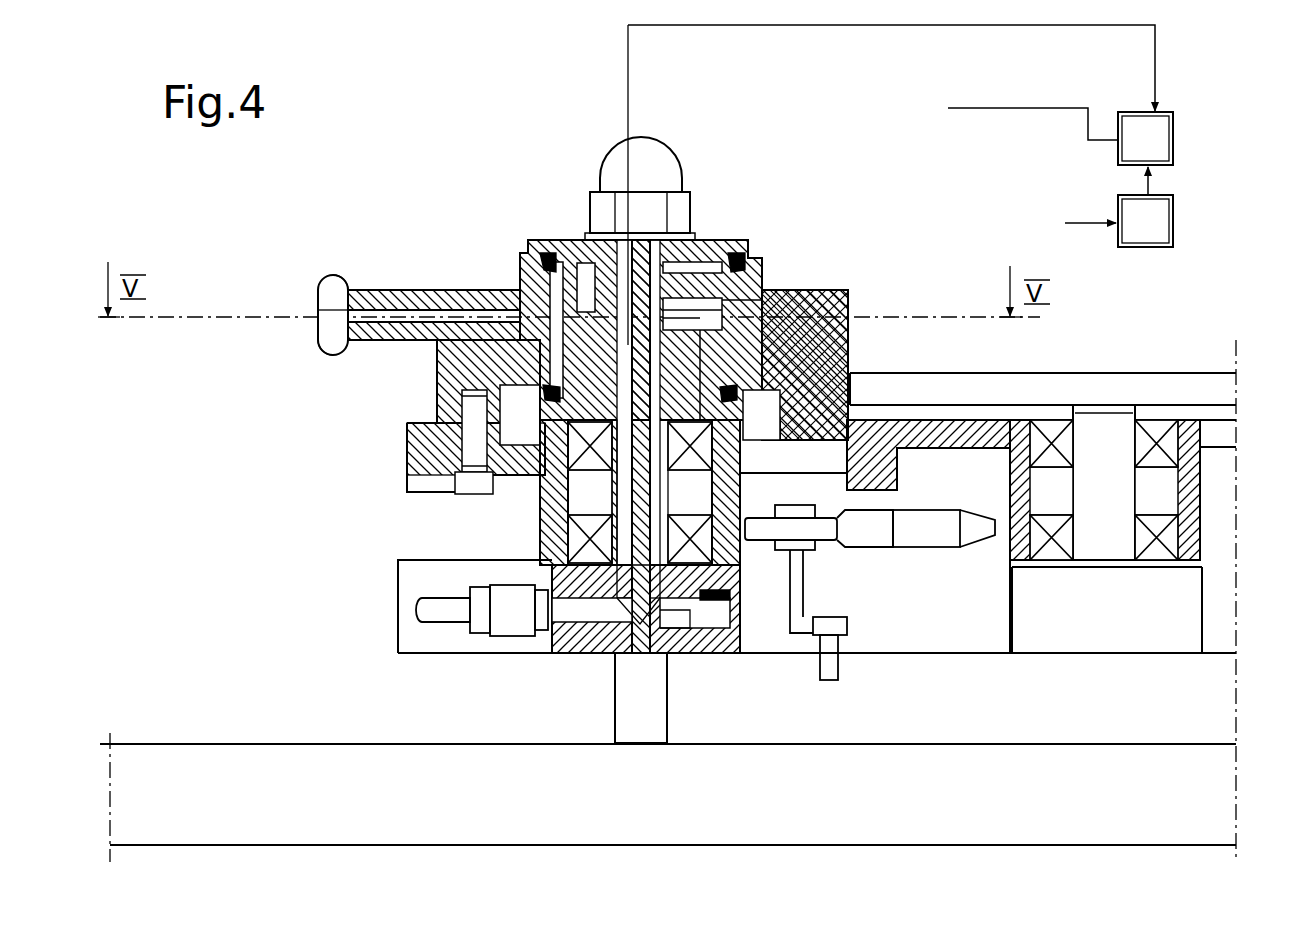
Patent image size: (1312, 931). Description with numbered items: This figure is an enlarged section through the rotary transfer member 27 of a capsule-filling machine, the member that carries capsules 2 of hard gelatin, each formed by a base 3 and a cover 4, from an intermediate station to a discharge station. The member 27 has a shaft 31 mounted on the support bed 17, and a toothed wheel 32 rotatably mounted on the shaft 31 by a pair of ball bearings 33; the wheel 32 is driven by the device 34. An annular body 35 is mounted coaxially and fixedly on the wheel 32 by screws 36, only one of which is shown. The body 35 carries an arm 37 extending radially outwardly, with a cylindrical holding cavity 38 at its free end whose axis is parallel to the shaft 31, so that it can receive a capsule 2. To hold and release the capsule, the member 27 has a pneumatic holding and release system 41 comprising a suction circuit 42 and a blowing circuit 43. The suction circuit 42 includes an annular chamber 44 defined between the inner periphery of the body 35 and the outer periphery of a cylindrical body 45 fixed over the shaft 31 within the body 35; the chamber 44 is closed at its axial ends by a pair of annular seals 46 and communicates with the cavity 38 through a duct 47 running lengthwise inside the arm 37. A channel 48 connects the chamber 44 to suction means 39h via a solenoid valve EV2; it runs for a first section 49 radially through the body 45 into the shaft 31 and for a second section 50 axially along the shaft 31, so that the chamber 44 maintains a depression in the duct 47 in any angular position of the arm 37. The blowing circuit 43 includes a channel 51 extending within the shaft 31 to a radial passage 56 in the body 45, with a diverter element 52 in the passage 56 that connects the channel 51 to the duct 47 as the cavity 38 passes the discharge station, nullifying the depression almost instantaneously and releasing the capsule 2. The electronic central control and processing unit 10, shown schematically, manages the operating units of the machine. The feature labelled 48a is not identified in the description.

The capsule 2 is at (330, 274).
The base 3 is at (352, 350).
The cover 4 is at (336, 292).
The electronic central control and processing unit 10 is at (891, 94).
The support bed 17 is at (312, 843).
The member 27 is at (778, 247).
The shaft 31 is at (690, 535).
The toothed wheel 32 is at (833, 470).
The ball bearings 33 is at (547, 560).
The device 34 is at (1207, 496).
The annular body 35 is at (808, 288).
The screws 36 is at (462, 500).
The arm 37 is at (430, 350).
The cylindrical holding cavity 38 is at (342, 298).
The suction means 39h is at (1148, 248).
The holding and release system 41 is at (634, 615).
The suction circuit 42 is at (504, 638).
The blowing circuit 43 is at (677, 634).
The annular chamber 44 is at (555, 240).
The cylindrical body 45 is at (633, 262).
The annular seals 46 is at (768, 256).
The duct 47 is at (390, 314).
The channel 48 is at (615, 503).
The bearing support 48a is at (663, 503).
The first section 49 is at (484, 442).
The second section 50 is at (547, 467).
The channel 51 is at (880, 415).
The diverter element 52 is at (722, 302).
The radial passage 56 is at (848, 298).
The solenoid valve EV2 is at (1118, 135).